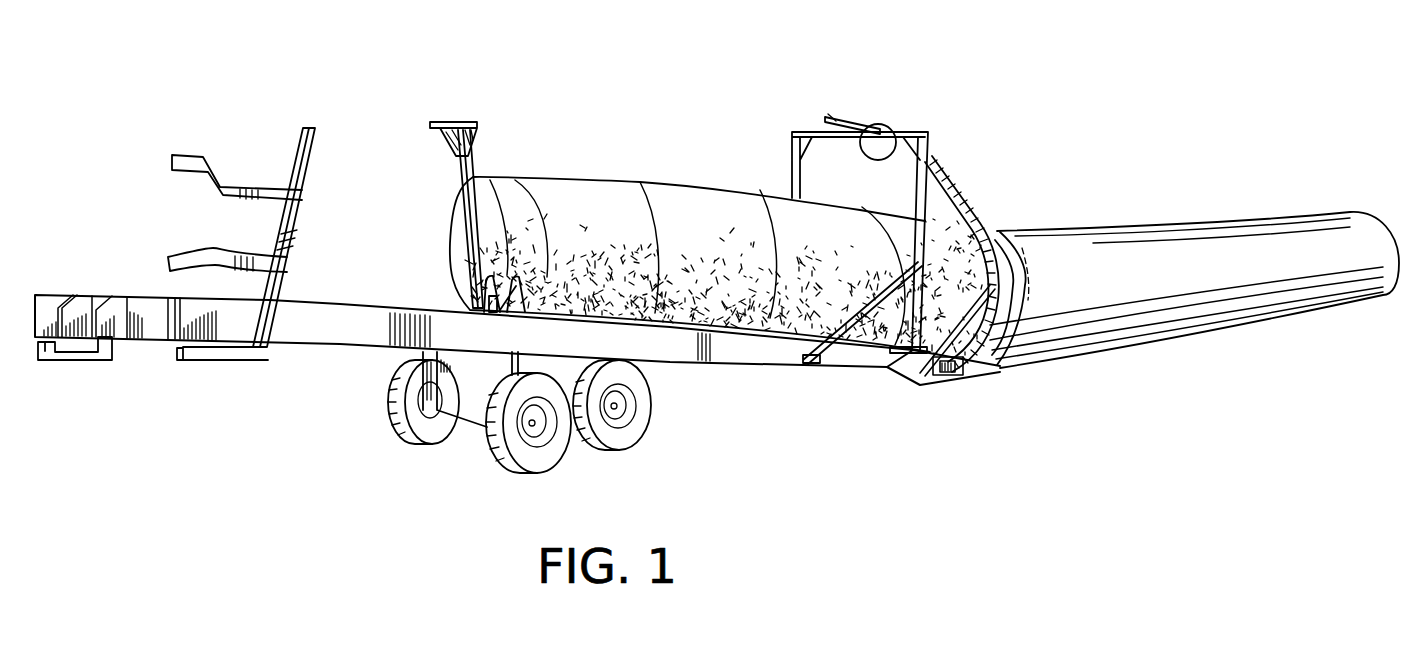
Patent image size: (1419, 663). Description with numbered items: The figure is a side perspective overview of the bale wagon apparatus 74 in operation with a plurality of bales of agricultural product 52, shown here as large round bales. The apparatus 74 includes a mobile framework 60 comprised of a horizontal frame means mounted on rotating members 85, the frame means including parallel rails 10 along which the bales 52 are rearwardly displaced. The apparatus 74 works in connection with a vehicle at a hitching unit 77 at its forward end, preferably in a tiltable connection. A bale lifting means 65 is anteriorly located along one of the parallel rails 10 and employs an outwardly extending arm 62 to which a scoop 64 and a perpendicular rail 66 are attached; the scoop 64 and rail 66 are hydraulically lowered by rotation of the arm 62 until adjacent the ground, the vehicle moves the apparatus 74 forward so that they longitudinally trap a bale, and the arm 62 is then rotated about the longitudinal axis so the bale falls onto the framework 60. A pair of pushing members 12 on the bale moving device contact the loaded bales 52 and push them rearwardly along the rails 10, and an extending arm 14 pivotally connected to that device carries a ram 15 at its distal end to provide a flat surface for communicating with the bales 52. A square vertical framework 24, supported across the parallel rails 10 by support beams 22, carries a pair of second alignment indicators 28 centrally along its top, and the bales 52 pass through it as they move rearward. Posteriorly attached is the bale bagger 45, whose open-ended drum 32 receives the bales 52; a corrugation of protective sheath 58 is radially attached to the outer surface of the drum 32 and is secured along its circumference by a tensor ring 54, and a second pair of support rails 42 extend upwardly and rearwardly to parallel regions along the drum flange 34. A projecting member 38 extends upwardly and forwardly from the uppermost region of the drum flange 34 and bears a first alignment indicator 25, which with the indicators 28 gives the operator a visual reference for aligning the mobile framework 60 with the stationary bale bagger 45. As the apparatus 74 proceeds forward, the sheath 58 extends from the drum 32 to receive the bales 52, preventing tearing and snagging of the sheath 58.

The parallel rails 10 is at (737, 352).
The pushing members 12 is at (513, 210).
The extending arm 14 is at (455, 178).
The ram 15 is at (455, 120).
The support beams 22 is at (835, 352).
The square vertical framework 24 is at (805, 125).
The first alignment indicator 25 is at (825, 115).
The second alignment indicators 28 is at (882, 140).
The open-ended drum 32 is at (1028, 300).
The drum flange 34 is at (1025, 275).
The projecting member 38 is at (835, 115).
The second pair of support rails 42 is at (958, 376).
The bale bagger 45 is at (1030, 246).
The bales of agricultural product 52 is at (775, 205).
The tensor ring 54 is at (1027, 277).
The protective sheath 58 is at (1260, 248).
The mobile framework 60 is at (537, 436).
The outwardly extending arm 62 is at (310, 128).
The scoop 64 is at (215, 163).
The bale lifting means 65 is at (176, 249).
The perpendicular rail 66 is at (170, 258).
The bale wagon apparatus 74 is at (460, 176).
The hitching unit 77 is at (70, 362).
The rotating members 85 is at (602, 447).